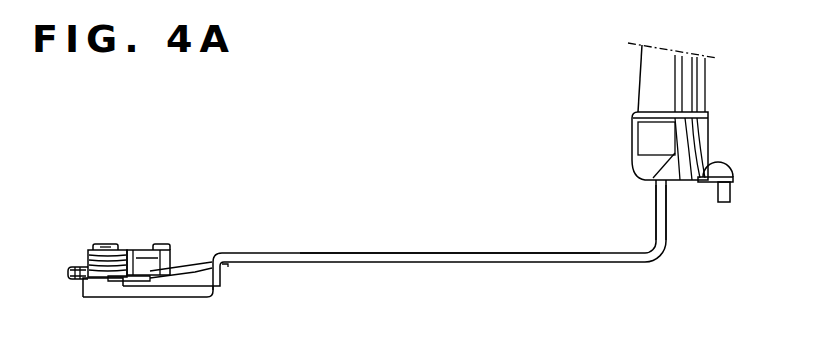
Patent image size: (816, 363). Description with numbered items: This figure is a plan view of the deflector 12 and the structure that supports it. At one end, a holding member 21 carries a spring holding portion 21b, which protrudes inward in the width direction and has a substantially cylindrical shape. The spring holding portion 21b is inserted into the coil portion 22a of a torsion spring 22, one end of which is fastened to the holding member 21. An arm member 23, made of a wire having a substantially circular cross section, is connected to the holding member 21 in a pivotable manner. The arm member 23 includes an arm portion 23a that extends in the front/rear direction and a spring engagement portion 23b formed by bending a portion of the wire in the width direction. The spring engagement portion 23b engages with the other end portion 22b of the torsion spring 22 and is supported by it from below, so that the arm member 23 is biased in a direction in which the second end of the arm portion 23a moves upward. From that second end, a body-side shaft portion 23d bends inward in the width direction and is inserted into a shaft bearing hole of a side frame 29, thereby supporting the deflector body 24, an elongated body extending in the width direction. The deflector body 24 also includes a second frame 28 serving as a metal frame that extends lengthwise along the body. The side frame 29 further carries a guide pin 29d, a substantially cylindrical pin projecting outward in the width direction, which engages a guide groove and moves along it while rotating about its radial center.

The deflector 12 is at (702, 302).
The holding member 21 is at (103, 297).
The spring holding portion 21b is at (105, 243).
The torsion spring 22 is at (138, 248).
The coil portion 22a is at (83, 259).
The other end portion 22b is at (188, 282).
The arm member 23 is at (512, 253).
The arm portion 23a is at (408, 253).
The spring engagement portion 23b is at (222, 277).
The body-side shaft portion 23d is at (666, 222).
The deflector body 24 is at (641, 73).
The second frame 28 is at (696, 85).
The side frame 29 is at (633, 128).
The guide pin 29d is at (733, 193).